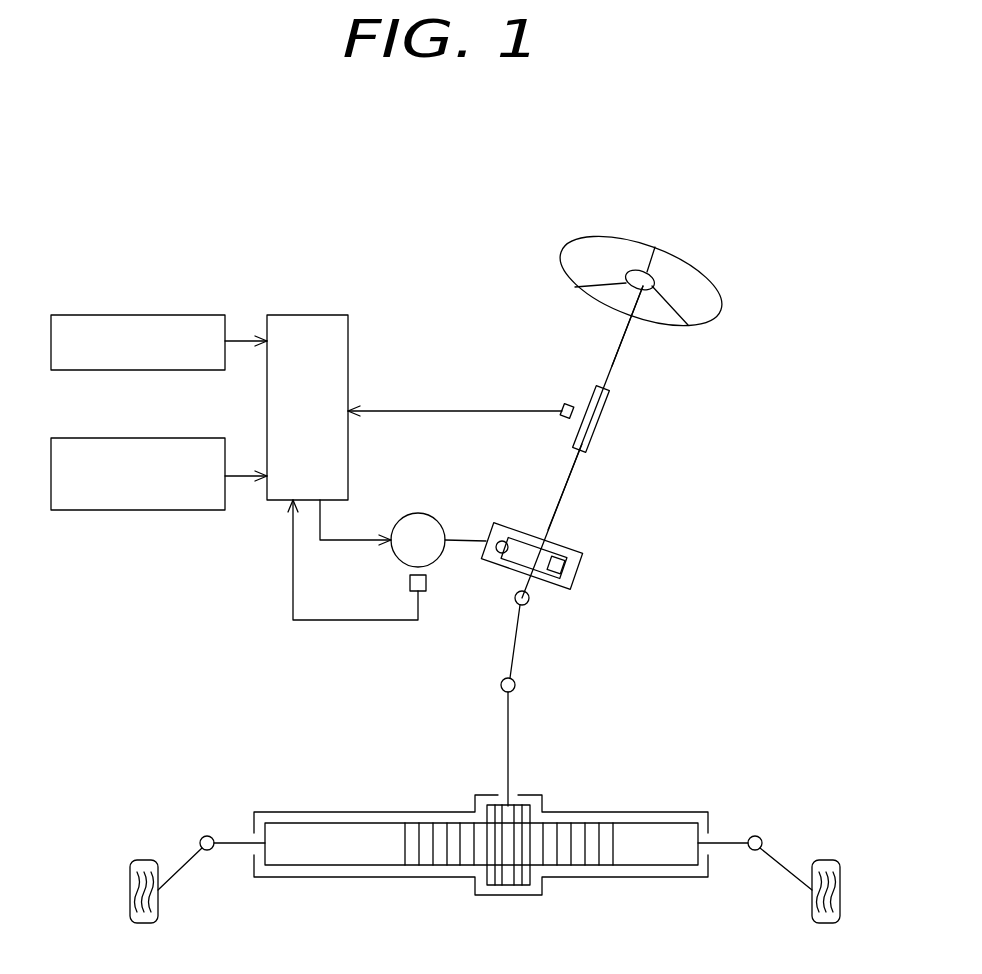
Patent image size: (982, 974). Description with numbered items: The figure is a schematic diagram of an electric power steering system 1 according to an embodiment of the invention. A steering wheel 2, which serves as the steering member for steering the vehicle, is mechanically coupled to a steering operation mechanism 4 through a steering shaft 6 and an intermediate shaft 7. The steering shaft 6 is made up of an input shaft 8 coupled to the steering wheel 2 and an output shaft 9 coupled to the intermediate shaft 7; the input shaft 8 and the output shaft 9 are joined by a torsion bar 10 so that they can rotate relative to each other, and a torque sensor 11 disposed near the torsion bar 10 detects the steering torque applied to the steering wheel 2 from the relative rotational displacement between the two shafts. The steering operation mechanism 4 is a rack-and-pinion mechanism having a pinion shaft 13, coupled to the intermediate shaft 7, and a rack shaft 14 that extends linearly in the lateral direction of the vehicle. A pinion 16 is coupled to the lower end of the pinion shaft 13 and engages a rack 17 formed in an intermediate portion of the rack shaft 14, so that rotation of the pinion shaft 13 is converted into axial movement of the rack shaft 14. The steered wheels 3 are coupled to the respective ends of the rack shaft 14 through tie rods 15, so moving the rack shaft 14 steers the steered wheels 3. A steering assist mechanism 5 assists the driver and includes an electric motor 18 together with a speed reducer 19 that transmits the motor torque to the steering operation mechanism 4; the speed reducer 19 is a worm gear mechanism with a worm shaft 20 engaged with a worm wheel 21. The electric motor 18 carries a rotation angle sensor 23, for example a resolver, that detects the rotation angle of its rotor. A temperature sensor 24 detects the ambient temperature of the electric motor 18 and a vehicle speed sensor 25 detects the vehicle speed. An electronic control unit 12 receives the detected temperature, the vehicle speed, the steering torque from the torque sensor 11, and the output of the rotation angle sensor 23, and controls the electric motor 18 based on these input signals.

The electric power steering system 1 is at (722, 249).
The steering wheel 2 is at (718, 302).
The steered wheels 3 is at (140, 860).
The steering operation mechanism 4 is at (563, 823).
The steering assist mechanism 5 is at (405, 470).
The steering shaft 6 is at (622, 340).
The intermediate shaft 7 is at (515, 655).
The input shaft 8 is at (610, 372).
The output shaft 9 is at (565, 494).
The torsion bar 10 is at (604, 428).
The torque sensor 11 is at (560, 406).
The electronic control unit 12 is at (307, 315).
The pinion shaft 13 is at (509, 736).
The rack shaft 14 is at (656, 866).
The tie rods 15 is at (180, 868).
The pinion 16 is at (508, 886).
The rack 17 is at (428, 866).
The electric motor 18 is at (418, 513).
The speed reducer 19 is at (510, 527).
The worm shaft 20 is at (498, 553).
The worm wheel 21 is at (578, 570).
The rotation angle sensor 23 is at (410, 583).
The temperature sensor 24 is at (138, 315).
The vehicle speed sensor 25 is at (138, 438).